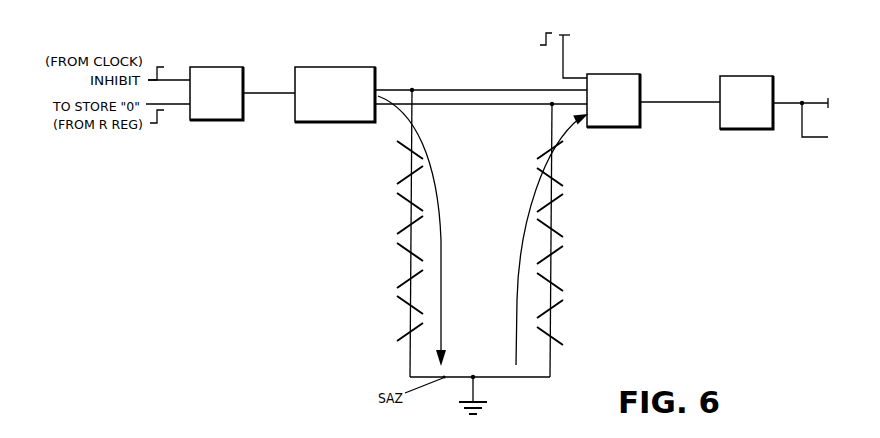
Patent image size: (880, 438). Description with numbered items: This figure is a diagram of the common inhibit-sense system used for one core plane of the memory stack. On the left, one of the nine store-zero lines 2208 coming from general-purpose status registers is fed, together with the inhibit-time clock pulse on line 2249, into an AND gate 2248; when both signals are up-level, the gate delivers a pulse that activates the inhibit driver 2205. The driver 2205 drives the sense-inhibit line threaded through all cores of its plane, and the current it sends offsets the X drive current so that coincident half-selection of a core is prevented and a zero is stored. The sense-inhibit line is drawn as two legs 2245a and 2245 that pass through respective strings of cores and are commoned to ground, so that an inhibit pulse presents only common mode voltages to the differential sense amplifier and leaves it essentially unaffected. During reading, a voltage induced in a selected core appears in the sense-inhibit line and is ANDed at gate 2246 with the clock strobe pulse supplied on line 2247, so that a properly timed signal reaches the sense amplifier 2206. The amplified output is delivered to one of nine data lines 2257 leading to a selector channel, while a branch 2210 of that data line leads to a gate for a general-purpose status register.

The inhibit time clock line 2249 is at (183, 79).
The AND gate 2248 is at (243, 67).
The store zero line 2208 is at (190, 107).
The inhibit driver 2205 is at (378, 59).
The clock strobe line 2247 is at (565, 74).
The AND gate 2246 is at (636, 78).
The sense amplifier 2206 is at (756, 79).
The data line 2257 is at (804, 101).
The data line branch 2210 is at (806, 138).
The sense-inhibit line leg 2245a is at (410, 189).
The sense-inhibit line leg 2245 is at (551, 216).